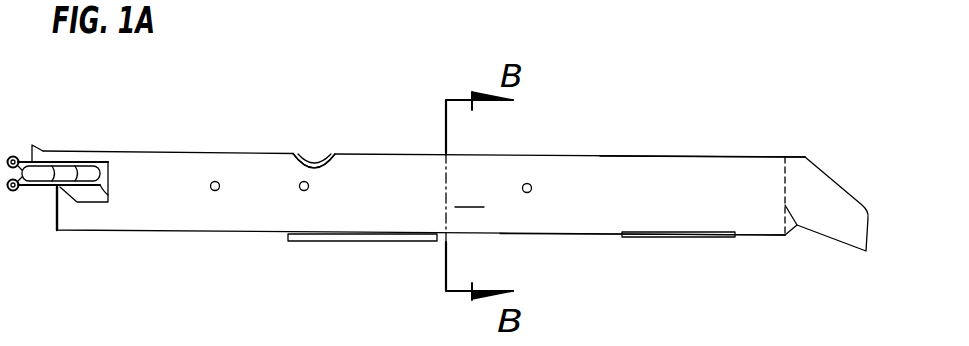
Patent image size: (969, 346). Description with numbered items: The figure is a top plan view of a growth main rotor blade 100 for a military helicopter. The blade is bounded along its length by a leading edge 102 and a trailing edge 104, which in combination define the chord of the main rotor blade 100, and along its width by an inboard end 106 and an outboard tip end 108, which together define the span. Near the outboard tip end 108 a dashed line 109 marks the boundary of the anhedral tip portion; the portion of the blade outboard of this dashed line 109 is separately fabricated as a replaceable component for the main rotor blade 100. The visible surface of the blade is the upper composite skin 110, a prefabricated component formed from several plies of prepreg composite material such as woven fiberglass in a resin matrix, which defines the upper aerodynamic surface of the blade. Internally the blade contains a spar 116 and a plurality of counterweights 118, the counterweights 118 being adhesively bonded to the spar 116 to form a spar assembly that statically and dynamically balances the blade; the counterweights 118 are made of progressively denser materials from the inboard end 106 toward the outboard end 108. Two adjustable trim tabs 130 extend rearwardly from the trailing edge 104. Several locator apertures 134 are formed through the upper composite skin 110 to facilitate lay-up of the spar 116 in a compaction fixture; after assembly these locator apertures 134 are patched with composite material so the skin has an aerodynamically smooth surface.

The main rotor blade 100 is at (531, 119).
The leading edge 102 is at (648, 154).
The trailing edge 104 is at (538, 244).
The inboard end 106 is at (63, 148).
The outboard (tip) end 108 is at (787, 152).
The dashed line 109 is at (797, 226).
The upper composite skin 110 is at (469, 193).
The spar 116 is at (310, 157).
The counterweights 118 is at (340, 136).
The adjustable trim tabs 130 is at (355, 246).
The locator apertures 134 is at (216, 181).